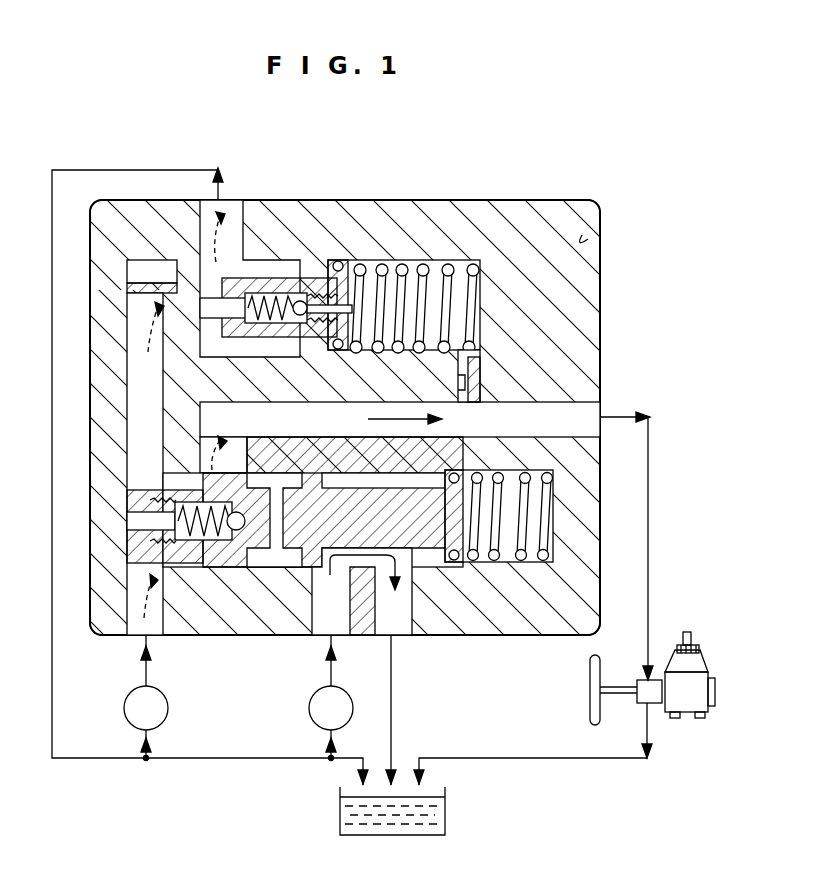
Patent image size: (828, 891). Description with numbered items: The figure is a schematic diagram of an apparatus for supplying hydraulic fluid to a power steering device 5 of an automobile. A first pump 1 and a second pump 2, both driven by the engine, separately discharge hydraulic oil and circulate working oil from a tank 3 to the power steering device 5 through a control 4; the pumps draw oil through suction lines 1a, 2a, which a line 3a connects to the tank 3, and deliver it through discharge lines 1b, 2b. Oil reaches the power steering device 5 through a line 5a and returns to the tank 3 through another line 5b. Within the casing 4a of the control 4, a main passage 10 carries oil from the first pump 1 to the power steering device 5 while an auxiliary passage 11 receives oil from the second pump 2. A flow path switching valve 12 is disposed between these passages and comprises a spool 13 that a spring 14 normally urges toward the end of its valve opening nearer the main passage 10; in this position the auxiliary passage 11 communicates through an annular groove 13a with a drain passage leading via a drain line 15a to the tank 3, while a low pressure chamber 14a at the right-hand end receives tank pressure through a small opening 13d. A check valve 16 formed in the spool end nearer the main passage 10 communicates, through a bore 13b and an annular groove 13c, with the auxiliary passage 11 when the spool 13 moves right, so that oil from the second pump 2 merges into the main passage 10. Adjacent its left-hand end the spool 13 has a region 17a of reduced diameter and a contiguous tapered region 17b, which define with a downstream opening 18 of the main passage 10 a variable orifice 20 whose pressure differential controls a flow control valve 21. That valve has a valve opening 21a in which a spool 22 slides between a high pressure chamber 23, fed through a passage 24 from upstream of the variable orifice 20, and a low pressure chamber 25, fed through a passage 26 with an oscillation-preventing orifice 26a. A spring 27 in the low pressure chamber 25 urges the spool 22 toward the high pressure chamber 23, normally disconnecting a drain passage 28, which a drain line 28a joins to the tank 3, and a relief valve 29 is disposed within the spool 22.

The first pump 1 is at (170, 708).
The suction line of first pump 1a is at (143, 752).
The discharge line of first pump 1b is at (148, 666).
The second pump 2 is at (310, 708).
The suction line of second pump 2a is at (334, 752).
The discharge line of second pump 2b is at (333, 666).
The tank 3 is at (394, 836).
The line 3a is at (262, 760).
The control 4 is at (556, 190).
The casing 4a is at (588, 239).
The power steering device 5 is at (400, 610).
The line 5a is at (650, 538).
The line 5b is at (550, 760).
The main passage 10 is at (570, 422).
The auxiliary passage 11 is at (324, 636).
The flow path switching valve 12 is at (266, 632).
The spool 13 is at (350, 473).
The annular groove 13a is at (392, 555).
The bore 13b is at (285, 524).
The annular groove 13c is at (262, 563).
The small opening 13d is at (440, 478).
The spring 14 is at (522, 480).
The low pressure chamber 14a is at (545, 520).
The drain line 15a is at (392, 712).
The check valve 16 is at (233, 534).
The region of reduced diameter 17a is at (194, 562).
The tapered region 17b is at (135, 562).
The downstream opening 18 is at (190, 466).
The variable orifice 20 is at (222, 462).
The flow control valve 21 is at (304, 258).
The valve opening 21a is at (395, 262).
The spool 22 is at (266, 262).
The high pressure chamber 23 is at (150, 270).
The passage 24 is at (128, 388).
The low pressure chamber 25 is at (462, 300).
The passage 26 is at (478, 393).
The orifice 26a is at (470, 375).
The spring 27 is at (445, 268).
The drain passage 28 is at (240, 210).
The drain line 28a is at (156, 170).
The relief valve 29 is at (306, 296).